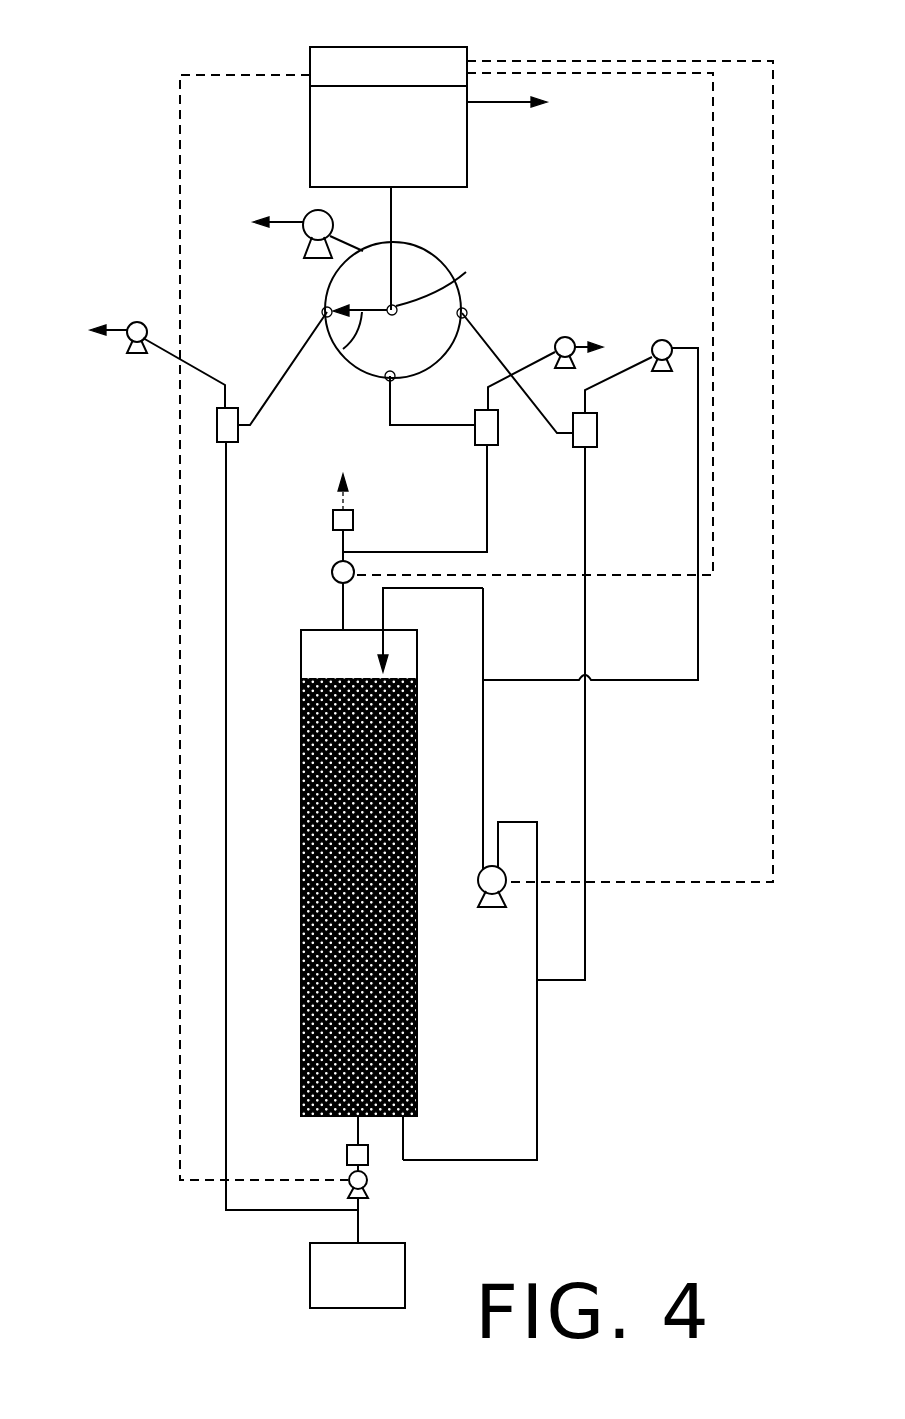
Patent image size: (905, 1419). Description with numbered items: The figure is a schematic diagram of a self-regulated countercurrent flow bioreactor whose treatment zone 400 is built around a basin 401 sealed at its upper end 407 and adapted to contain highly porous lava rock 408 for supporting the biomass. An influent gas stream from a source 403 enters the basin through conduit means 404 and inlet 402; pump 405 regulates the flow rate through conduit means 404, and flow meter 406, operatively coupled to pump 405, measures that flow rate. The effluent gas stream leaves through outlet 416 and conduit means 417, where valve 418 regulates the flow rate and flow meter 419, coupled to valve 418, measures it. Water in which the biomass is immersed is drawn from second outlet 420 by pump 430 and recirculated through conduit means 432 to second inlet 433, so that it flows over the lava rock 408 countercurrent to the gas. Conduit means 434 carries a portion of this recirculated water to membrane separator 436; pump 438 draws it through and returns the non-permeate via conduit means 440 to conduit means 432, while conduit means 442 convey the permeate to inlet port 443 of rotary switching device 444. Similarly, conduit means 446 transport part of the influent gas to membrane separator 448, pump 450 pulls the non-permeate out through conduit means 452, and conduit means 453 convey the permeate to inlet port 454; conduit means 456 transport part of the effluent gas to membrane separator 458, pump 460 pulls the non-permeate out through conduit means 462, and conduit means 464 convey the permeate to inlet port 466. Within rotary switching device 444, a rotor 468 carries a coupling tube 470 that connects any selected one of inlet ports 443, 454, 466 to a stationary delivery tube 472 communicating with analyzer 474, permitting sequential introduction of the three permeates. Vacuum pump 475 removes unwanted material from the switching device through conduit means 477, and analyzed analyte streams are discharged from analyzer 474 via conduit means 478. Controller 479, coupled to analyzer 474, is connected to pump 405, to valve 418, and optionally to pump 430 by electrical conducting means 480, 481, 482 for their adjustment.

The treatment zone 400 is at (280, 1038).
The basin 401 is at (301, 922).
The inlet 402 is at (362, 1118).
The source 403 is at (310, 1258).
The conduit means 404 is at (360, 1235).
The pump 405 is at (350, 1185).
The flow meter 406 is at (347, 1158).
The upper end 407 is at (305, 630).
The highly porous lava rock 408 is at (301, 710).
The outlet 416 is at (343, 628).
The conduit means 417 is at (345, 498).
The valve 418 is at (335, 565).
The flow meter 419 is at (353, 520).
The second outlet 420 is at (403, 1118).
The pump 430 is at (478, 882).
The conduit means 432 is at (503, 822).
The second inlet 433 is at (387, 627).
The conduit means 434 is at (585, 825).
The membrane separator 436 is at (598, 439).
The pump 438 is at (660, 340).
The conduit means 440 is at (622, 373).
The conduit means 442 is at (483, 340).
The inlet port 443 is at (466, 311).
The rotary switching device 444 is at (348, 376).
The conduit means 446 is at (226, 490).
The membrane separator 448 is at (240, 437).
The pump 450 is at (136, 321).
The conduit means 452 is at (165, 352).
The conduit means 453 is at (278, 380).
The inlet port 454 is at (324, 309).
The conduit means 456 is at (444, 500).
The membrane separator 458 is at (499, 427).
The pump 460 is at (565, 337).
The conduit means 462 is at (527, 366).
The conduit means 464 is at (395, 430).
The inlet port 466 is at (395, 380).
The rotor 468 is at (466, 273).
The coupling tube 470 is at (347, 343).
The stationary delivery tube 472 is at (391, 262).
The analyzer 474 is at (310, 168).
The vacuum pump 475 is at (308, 217).
The conduit means 477 is at (350, 246).
The conduit means 478 is at (484, 105).
The controller 479 is at (350, 47).
The electrical conducting means 480 is at (180, 150).
The electrical conducting means 481 is at (713, 155).
The electrical conducting means 482 is at (773, 692).